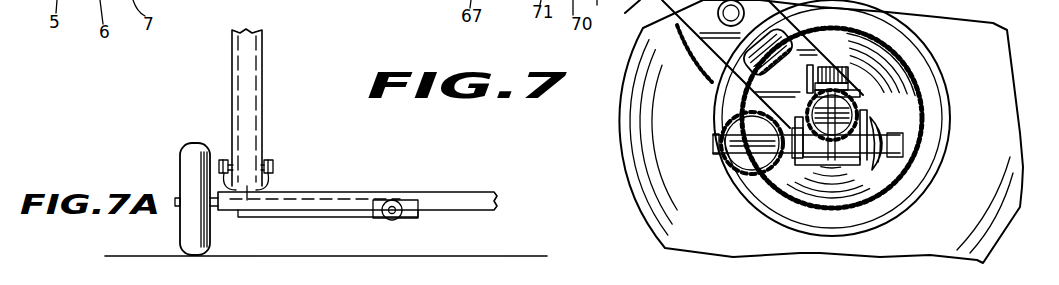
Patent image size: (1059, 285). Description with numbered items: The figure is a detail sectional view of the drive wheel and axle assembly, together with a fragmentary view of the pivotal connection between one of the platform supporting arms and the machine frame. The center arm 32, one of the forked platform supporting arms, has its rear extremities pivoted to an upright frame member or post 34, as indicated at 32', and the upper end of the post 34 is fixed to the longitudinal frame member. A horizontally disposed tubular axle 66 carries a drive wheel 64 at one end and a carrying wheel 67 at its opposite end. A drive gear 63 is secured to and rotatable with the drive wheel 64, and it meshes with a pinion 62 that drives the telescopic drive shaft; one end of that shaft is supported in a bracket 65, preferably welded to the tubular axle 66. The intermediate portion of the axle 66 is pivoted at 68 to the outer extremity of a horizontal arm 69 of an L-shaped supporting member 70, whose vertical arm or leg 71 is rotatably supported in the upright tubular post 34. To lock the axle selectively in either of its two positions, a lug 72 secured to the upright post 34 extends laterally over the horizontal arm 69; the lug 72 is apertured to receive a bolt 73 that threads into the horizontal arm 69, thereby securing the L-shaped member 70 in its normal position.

In FIG. 7A, the carrying wheel 67 is at (193, 155).
In FIG. 7A, the upright frame member or post 34 is at (247, 78).
In FIG. 7A, the tubular axle 66 is at (462, 195).
In FIG. 7, the tubular axle 66 is at (858, 95).
In FIG. 7A, the L-shaped supporting member 70 is at (316, 219).
In FIG. 7A, the pivot 68 is at (392, 200).
In FIG. 7, the pivot 68 is at (897, 146).
In FIG. 7A, the vertical arm or leg 71 is at (247, 190).
In FIG. 7A, the center arm 32 is at (270, 173).
In FIG. 7A, the pivotal connection 32' is at (285, 151).
In FIG. 7, the drive wheel 64 is at (650, 198).
In FIG. 7, the drive gear 63 is at (920, 143).
In FIG. 7, the bracket 65 is at (733, 57).
In FIG. 7, the pinion 62 is at (690, 55).
In FIG. 7, the horizontal arm 69 is at (732, 166).
In FIG. 7, the lug 72 is at (850, 78).
In FIG. 7, the bolt 73 is at (868, 112).